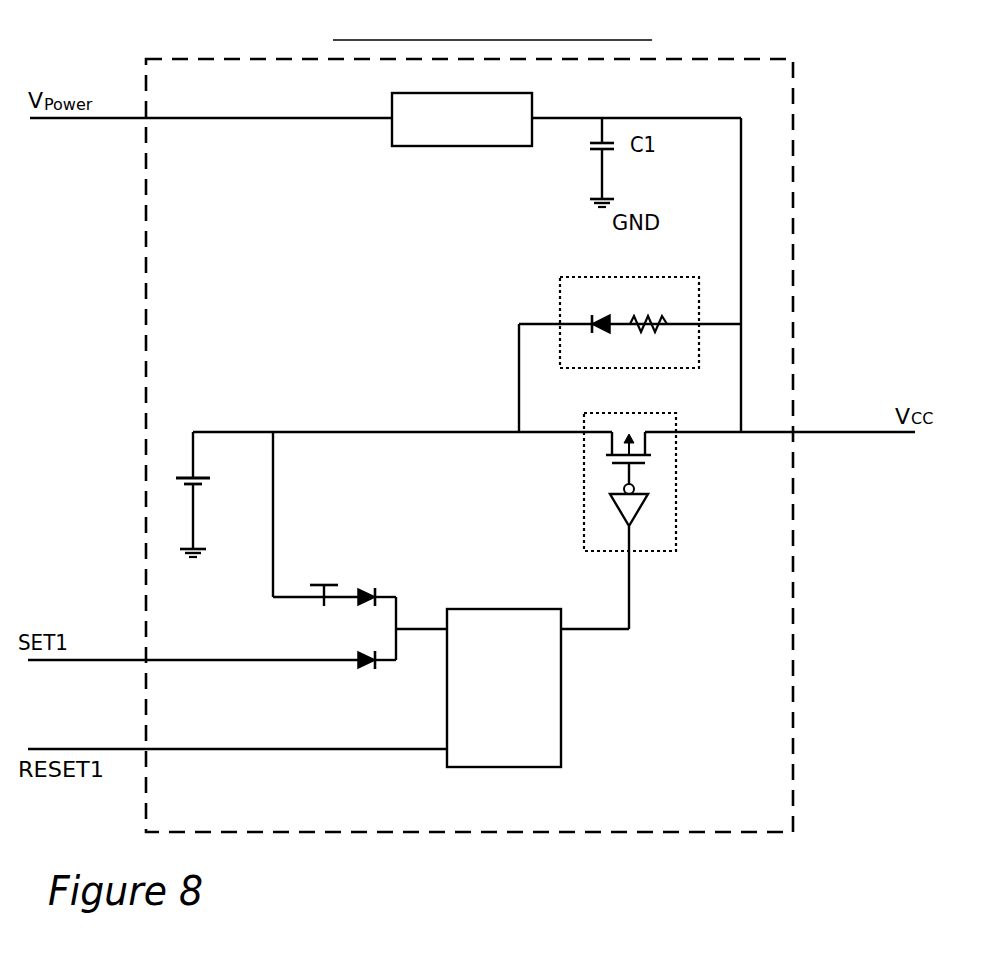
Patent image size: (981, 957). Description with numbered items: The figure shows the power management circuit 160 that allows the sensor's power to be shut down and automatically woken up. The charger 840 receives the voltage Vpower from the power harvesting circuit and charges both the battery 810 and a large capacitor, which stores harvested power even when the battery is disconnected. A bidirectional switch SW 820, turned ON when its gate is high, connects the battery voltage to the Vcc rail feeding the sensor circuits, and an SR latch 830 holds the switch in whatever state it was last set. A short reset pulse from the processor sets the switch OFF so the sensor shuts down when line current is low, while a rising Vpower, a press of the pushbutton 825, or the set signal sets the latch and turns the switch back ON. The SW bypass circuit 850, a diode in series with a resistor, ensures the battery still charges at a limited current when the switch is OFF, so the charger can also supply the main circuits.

The power management circuit 160 is at (469, 421).
The battery 810 is at (193, 461).
The switch SW 820 is at (676, 505).
The pushbutton 825 is at (360, 546).
The SR latch 830 is at (562, 690).
The charger 840 is at (392, 137).
The SW bypass circuit 850 is at (560, 277).